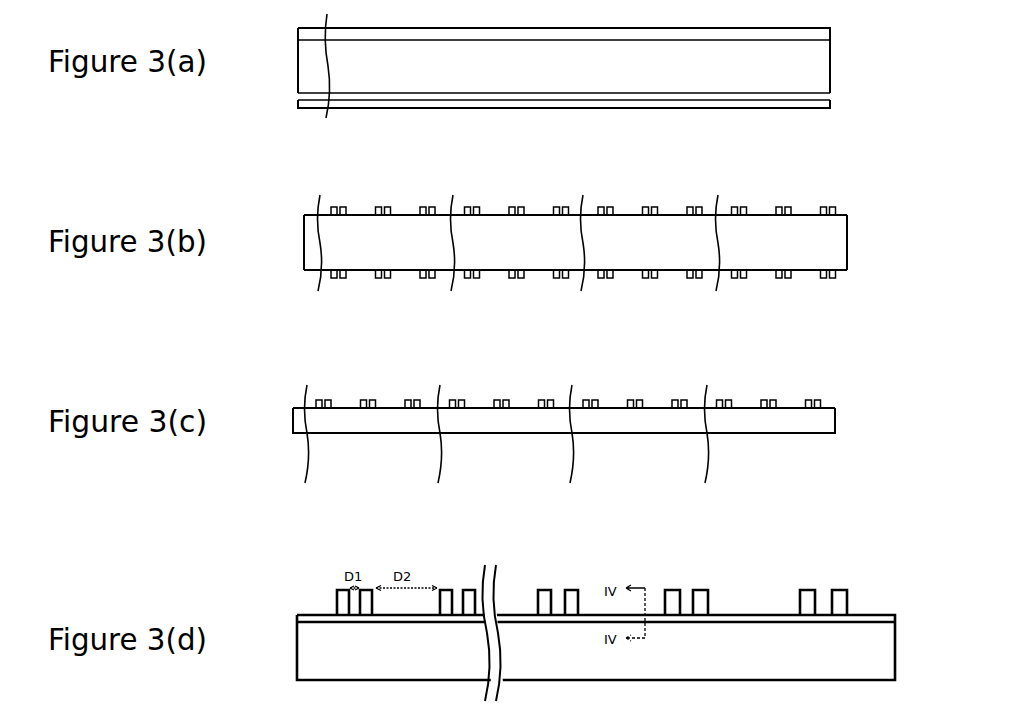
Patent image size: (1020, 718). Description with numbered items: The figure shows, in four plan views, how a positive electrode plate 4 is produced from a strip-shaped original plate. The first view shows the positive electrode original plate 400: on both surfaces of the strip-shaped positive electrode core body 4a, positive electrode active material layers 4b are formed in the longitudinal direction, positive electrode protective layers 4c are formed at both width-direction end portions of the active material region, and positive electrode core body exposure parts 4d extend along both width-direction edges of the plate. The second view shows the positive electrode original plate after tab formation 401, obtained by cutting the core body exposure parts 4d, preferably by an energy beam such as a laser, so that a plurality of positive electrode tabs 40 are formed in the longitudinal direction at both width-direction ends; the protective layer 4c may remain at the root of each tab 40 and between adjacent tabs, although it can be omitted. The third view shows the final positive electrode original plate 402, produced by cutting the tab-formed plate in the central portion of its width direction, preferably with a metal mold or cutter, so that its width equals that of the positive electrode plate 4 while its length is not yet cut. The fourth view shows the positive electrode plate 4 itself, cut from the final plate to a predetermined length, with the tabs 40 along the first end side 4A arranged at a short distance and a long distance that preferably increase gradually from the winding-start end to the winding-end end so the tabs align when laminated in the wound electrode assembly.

In FIG. 3D, the positive electrode plate 4 is at (297, 610).
In FIG. 3D, the first end side 4A is at (592, 613).
In FIG. 3A, the positive electrode core body 4a is at (814, 106).
In FIG. 3A, the positive electrode active material layer 4b is at (824, 72).
In FIG. 3B, the positive electrode active material layer 4b is at (828, 243).
In FIG. 3C, the positive electrode active material layer 4b is at (818, 420).
In FIG. 3D, the positive electrode active material layer 4b is at (872, 650).
In FIG. 3A, the positive electrode protective layer 4c is at (834, 40).
In FIG. 3B, the positive electrode protective layer 4c is at (848, 215).
In FIG. 3C, the positive electrode protective layer 4c is at (836, 408).
In FIG. 3D, the positive electrode protective layer 4c is at (756, 613).
In FIG. 3A, the positive electrode core body exposure part 4d is at (830, 30).
In FIG. 3B, the positive electrode tab 40 is at (787, 205).
In FIG. 3C, the positive electrode tab 40 is at (774, 398).
In FIG. 3D, the positive electrode tab 40 is at (848, 598).
In FIG. 3A, the positive electrode original plate 400 is at (527, 113).
In FIG. 3B, the positive electrode original plate after tab formation 401 is at (410, 203).
In FIG. 3C, the final positive electrode original plate 402 is at (404, 398).